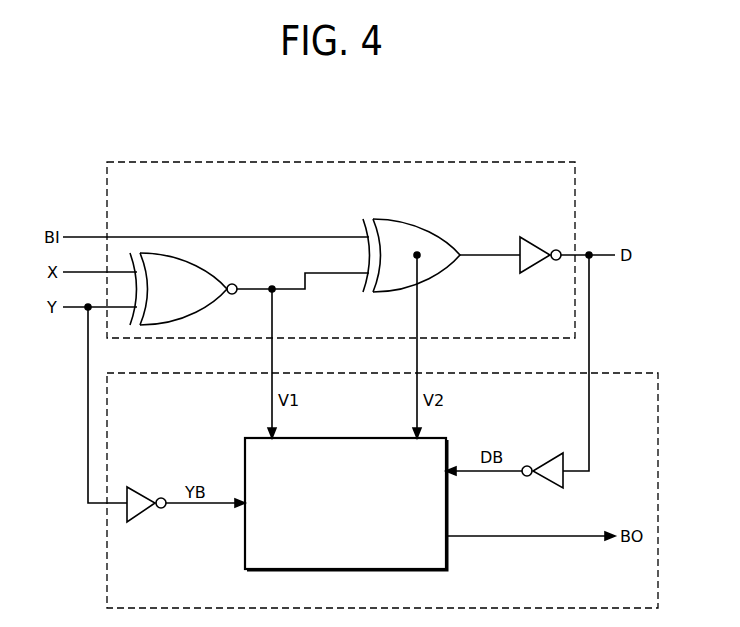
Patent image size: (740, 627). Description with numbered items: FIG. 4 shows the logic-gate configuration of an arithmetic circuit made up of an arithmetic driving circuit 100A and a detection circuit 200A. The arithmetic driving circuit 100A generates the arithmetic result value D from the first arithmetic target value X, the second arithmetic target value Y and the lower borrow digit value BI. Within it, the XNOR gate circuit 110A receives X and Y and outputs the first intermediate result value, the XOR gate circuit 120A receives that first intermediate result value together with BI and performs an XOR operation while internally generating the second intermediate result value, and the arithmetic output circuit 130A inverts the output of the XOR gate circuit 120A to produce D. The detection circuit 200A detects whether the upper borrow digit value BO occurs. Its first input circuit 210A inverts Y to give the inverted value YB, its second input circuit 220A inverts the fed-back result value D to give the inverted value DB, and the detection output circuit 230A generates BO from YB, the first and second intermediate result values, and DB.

The arithmetic driving circuit 100A is at (526, 162).
The XNOR gate circuit 110A is at (214, 273).
The XOR gate circuit 120A is at (411, 219).
The arithmetic output circuit 130A is at (535, 245).
The detection circuit 200A is at (610, 373).
The first input circuit 210A is at (142, 495).
The second input circuit 220A is at (547, 462).
The detection output circuit 230A is at (388, 571).